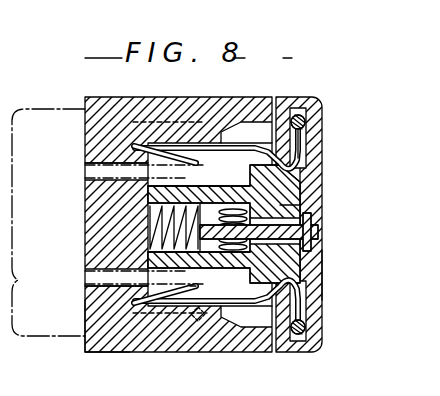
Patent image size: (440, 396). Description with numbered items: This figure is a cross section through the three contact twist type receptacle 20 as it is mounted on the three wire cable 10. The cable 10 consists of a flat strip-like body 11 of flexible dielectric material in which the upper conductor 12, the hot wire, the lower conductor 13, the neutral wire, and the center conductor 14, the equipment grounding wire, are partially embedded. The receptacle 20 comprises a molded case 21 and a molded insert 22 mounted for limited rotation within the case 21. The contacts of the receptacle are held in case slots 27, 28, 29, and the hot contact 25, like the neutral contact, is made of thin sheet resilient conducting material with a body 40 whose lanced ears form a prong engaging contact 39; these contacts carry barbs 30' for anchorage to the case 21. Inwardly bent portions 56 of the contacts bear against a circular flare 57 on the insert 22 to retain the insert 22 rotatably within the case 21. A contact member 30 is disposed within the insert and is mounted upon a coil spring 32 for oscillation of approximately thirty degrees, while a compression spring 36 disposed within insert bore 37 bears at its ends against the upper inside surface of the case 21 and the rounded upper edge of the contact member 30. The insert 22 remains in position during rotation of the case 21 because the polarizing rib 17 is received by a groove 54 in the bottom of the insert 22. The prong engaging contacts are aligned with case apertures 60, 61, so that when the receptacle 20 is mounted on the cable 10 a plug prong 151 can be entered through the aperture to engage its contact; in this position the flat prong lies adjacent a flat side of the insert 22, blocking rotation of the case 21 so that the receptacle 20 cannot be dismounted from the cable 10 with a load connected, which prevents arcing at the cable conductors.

The three wire cable 10 is at (322, 177).
The strip-like body 11 is at (312, 268).
The upper conductor 12 is at (305, 122).
The lower conductor 13 is at (305, 327).
The center conductor 14 is at (308, 237).
The polarizing rib 17 is at (300, 208).
The three contact twist type receptacle 20 is at (118, 351).
The molded case 21 is at (97, 343).
The molded insert 22 is at (216, 300).
The hot contact 25 is at (228, 307).
The case slot 27 is at (162, 122).
The case slot 28 is at (193, 283).
The case slot 29 is at (246, 135).
The contact member 30 is at (329, 232).
The barbs 30' is at (179, 228).
The coil spring 32 is at (254, 188).
The compression spring 36 is at (148, 214).
The insert bore 37 is at (262, 152).
The prong engaging contact 39 is at (172, 296).
The body 40 is at (200, 160).
The groove 54 is at (305, 190).
The inwardly bent portions 56 is at (300, 165).
The circular flare 57 is at (262, 283).
The case aperture 60 is at (86, 163).
The case aperture 61 is at (88, 283).
The plug prong 151 is at (92, 170).